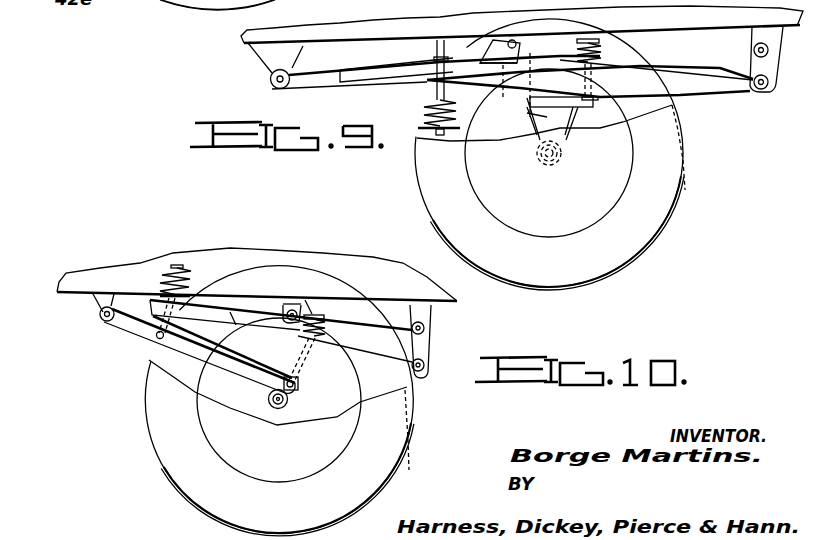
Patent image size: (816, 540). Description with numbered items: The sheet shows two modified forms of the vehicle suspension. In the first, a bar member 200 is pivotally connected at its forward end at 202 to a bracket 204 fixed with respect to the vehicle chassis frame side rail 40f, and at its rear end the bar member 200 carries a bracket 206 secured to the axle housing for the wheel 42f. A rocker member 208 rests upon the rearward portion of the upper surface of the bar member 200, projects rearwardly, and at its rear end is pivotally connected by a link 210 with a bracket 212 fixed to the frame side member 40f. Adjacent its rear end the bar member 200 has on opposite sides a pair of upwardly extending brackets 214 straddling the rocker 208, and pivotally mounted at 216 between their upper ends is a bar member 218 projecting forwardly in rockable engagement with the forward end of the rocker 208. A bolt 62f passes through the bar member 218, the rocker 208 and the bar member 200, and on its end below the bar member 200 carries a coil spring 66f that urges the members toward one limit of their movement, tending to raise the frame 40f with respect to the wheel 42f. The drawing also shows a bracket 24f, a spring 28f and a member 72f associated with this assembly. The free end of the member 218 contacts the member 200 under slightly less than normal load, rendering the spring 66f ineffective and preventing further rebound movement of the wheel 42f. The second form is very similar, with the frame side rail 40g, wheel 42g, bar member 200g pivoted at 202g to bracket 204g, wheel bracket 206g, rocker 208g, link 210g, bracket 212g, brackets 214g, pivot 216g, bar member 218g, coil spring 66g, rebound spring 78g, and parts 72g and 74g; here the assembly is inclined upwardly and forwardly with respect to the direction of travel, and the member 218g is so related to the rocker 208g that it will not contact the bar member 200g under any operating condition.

In FIG. 9, the vehicle chassis frame side rail 40f is at (247, 38).
In FIG. 9, the wheel 42f is at (667, 205).
In FIG. 9, the bolt 62f is at (443, 40).
In FIG. 9, the coil spring 66f is at (423, 107).
In FIG. 9, the spring seat bracket 72f is at (522, 105).
In FIG. 9, the pivot bracket 24f is at (458, 65).
In FIG. 9, the spring 28f is at (599, 52).
In FIG. 9, the bar member 200 is at (308, 88).
In FIG. 9, the pivotal connection 202 is at (275, 92).
In FIG. 9, the bracket 204 is at (267, 58).
In FIG. 9, the bracket 206 is at (537, 125).
In FIG. 9, the rocker member 208 is at (670, 97).
In FIG. 9, the link 210 is at (756, 58).
In FIG. 9, the bracket 212 is at (755, 38).
In FIG. 9, the upwardly extending brackets 214 is at (522, 74).
In FIG. 9, the pivot 216 is at (507, 36).
In FIG. 9, the bar member 218 is at (408, 63).
In FIG. 10, the vehicle chassis frame side rail 40g is at (457, 298).
In FIG. 10, the wheel 42g is at (391, 467).
In FIG. 10, the coil spring 66g is at (163, 275).
In FIG. 10, the spring anchor 72g is at (222, 365).
In FIG. 10, the bolt 74g is at (230, 312).
In FIG. 10, the rebound spring 78g is at (318, 330).
In FIG. 10, the bar member 200g is at (152, 335).
In FIG. 10, the pivotal connection 202g is at (103, 322).
In FIG. 10, the bracket 204g is at (102, 296).
In FIG. 10, the bracket 206g is at (272, 387).
In FIG. 10, the rocker member 208g is at (310, 355).
In FIG. 10, the link 210g is at (427, 351).
In FIG. 10, the bracket 212g is at (428, 322).
In FIG. 10, the upwardly extending brackets 214g is at (268, 337).
In FIG. 10, the pivot 216g is at (297, 306).
In FIG. 10, the bar member 218g is at (220, 303).